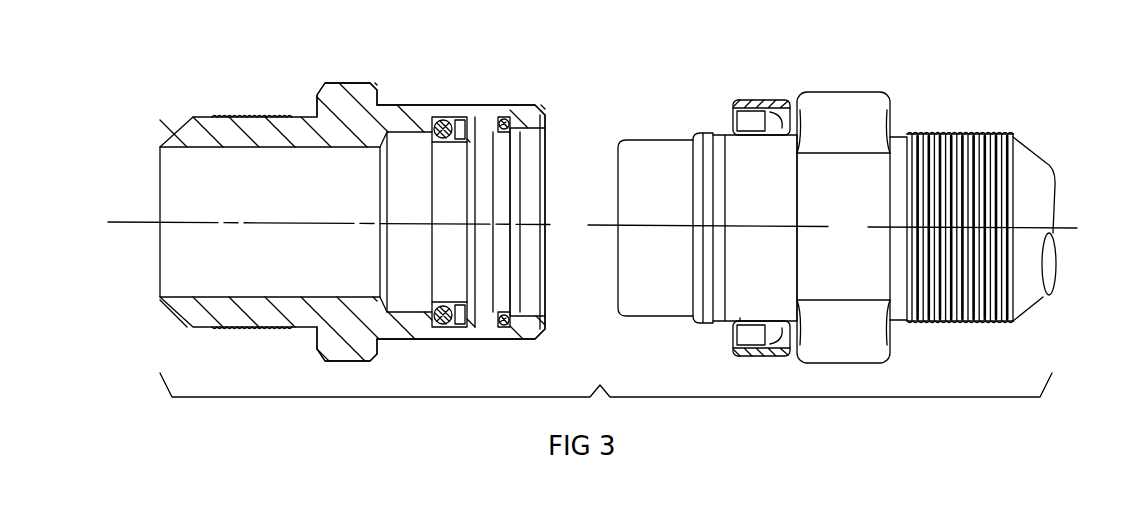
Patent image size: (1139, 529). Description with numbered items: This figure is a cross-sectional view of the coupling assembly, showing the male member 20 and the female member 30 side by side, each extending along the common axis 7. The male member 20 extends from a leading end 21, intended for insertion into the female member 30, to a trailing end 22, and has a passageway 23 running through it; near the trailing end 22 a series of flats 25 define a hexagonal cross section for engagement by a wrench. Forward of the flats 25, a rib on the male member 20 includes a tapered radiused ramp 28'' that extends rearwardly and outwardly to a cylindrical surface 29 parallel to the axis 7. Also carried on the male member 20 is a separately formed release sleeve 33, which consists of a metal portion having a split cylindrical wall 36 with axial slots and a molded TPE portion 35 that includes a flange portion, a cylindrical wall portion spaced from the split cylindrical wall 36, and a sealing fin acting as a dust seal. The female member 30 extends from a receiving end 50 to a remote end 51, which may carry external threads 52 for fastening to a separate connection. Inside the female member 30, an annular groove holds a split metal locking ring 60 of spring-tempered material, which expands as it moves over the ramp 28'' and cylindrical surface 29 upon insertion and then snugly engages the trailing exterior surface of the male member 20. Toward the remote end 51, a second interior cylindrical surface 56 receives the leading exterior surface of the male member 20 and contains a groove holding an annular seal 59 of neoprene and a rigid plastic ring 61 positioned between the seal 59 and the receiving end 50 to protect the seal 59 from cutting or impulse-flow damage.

The axis 7 is at (132, 222).
The male member 20 is at (918, 107).
The leading end 21 is at (618, 230).
The trailing end 22 is at (1057, 170).
The passageway 23 is at (1052, 272).
The flats 25 is at (866, 240).
The tapered radiused ramp 28'' is at (665, 204).
The cylindrical surface 29 is at (715, 208).
The female member 30 is at (338, 74).
The release sleeve 33 is at (787, 74).
The TPE portion 35 is at (745, 355).
The split cylindrical wall 36 is at (740, 318).
The receiving end 50 is at (545, 118).
The remote end 51 is at (160, 290).
The external threads 52 is at (235, 117).
The second interior cylindrical surface 56 is at (397, 147).
The annular seal 59 is at (447, 117).
The split metal locking ring 60 is at (505, 117).
The rigid plastic ring 61 is at (447, 336).